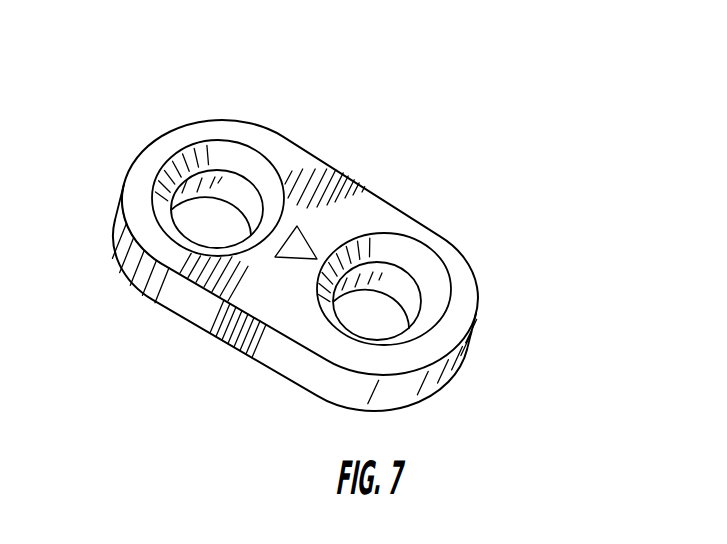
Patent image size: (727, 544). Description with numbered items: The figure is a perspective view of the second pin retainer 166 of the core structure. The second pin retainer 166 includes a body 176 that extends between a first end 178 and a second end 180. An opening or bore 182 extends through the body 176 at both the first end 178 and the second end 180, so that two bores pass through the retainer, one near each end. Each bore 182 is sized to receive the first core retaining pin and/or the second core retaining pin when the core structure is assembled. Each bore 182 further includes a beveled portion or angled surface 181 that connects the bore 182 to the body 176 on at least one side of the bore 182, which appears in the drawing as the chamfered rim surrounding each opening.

The second pin retainer 166 is at (445, 102).
The body 176 is at (297, 315).
The first end 178 is at (108, 173).
The second end 180 is at (458, 391).
The beveled portion or angled surface 181 is at (392, 240).
The opening or bore 182 is at (225, 193).